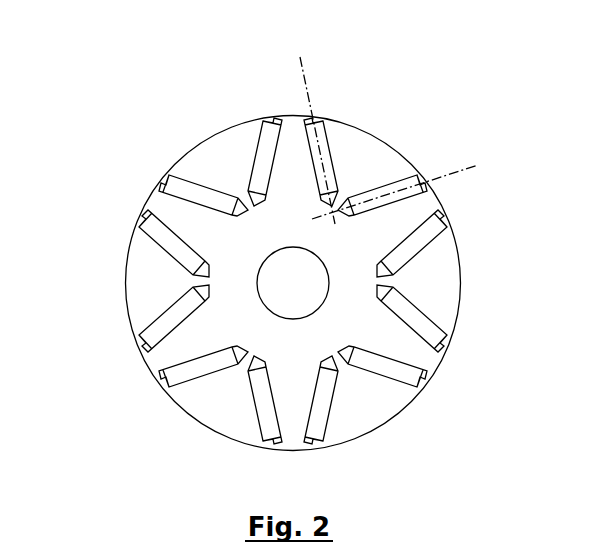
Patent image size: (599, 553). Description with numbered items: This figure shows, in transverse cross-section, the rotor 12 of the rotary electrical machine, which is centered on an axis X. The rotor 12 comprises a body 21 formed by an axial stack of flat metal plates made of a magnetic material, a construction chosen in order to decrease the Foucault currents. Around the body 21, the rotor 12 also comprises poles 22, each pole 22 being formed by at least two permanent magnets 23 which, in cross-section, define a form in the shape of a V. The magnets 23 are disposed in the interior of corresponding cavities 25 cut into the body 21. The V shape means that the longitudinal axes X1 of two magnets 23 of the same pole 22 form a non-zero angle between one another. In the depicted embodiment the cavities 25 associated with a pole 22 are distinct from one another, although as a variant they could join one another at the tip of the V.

The rotor 12 is at (106, 167).
The body 21 is at (180, 221).
The pole 22 is at (443, 262).
The permanent magnet 23 is at (203, 192).
The cavity 25 is at (341, 208).
The axis X is at (296, 283).
The longitudinal axis X1 is at (319, 72).